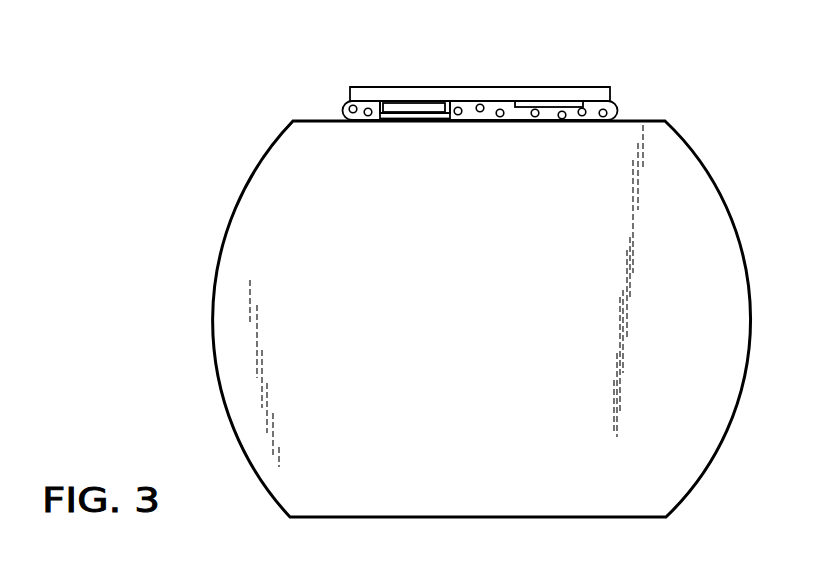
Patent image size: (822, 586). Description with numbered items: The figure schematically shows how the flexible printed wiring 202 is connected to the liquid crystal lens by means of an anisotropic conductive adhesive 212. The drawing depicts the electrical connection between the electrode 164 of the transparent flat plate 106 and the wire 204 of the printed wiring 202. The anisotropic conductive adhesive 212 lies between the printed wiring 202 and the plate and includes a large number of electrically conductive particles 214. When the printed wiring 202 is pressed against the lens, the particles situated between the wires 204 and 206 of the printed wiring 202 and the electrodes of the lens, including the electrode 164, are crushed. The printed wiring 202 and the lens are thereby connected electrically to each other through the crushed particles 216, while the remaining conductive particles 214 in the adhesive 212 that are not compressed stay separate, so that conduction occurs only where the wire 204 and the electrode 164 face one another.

The transparent flat plate 106 is at (268, 180).
The electrode 164 is at (408, 118).
The flexible printed wiring 202 is at (409, 93).
The wire 204 is at (441, 105).
The wire 206 is at (549, 104).
The anisotropic conductive adhesive 212 is at (617, 104).
The electrically conductive particles 214 is at (500, 113).
The crushed particles 216 is at (388, 104).